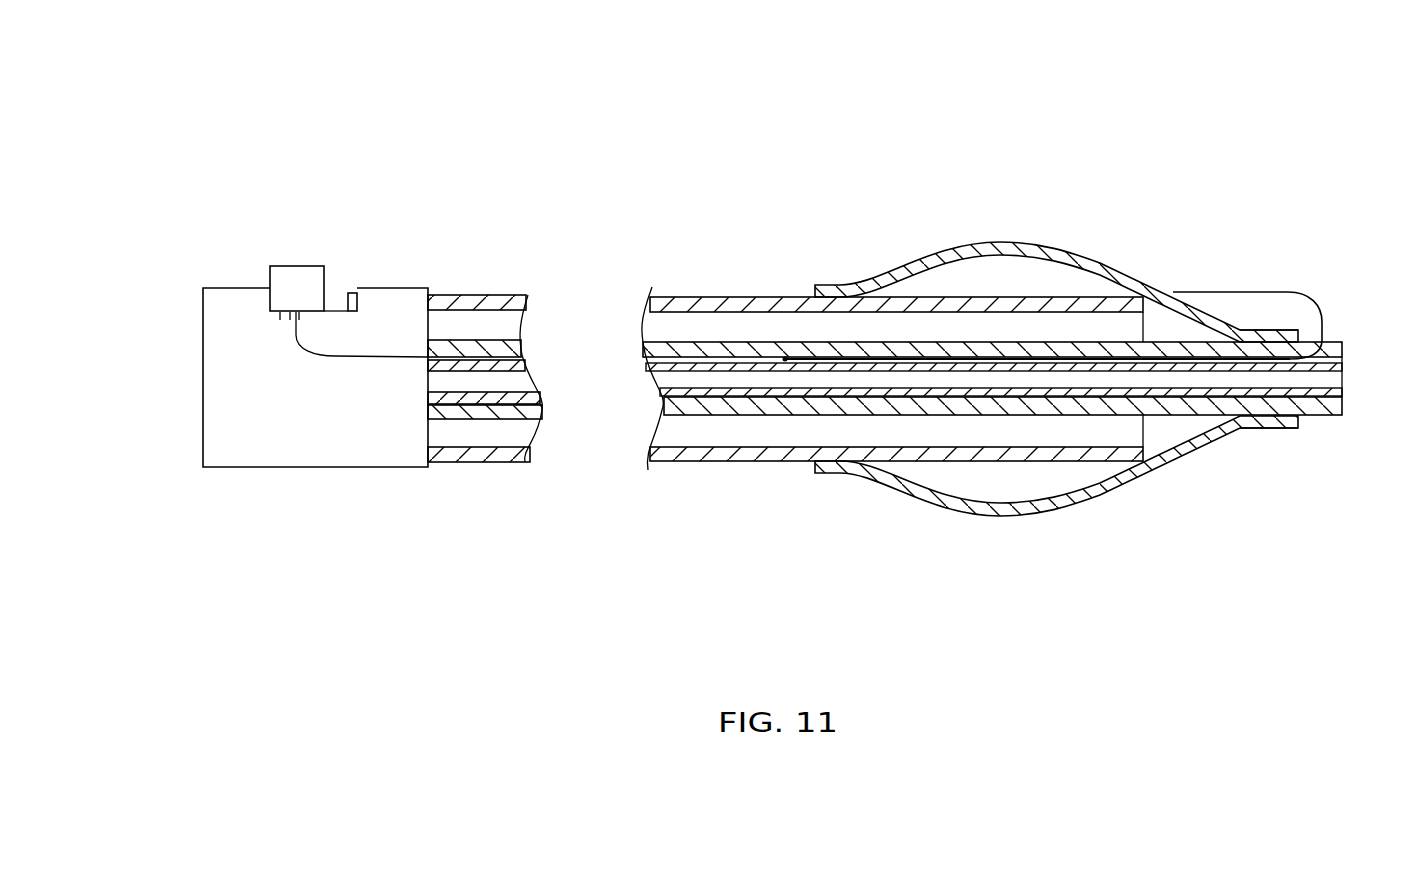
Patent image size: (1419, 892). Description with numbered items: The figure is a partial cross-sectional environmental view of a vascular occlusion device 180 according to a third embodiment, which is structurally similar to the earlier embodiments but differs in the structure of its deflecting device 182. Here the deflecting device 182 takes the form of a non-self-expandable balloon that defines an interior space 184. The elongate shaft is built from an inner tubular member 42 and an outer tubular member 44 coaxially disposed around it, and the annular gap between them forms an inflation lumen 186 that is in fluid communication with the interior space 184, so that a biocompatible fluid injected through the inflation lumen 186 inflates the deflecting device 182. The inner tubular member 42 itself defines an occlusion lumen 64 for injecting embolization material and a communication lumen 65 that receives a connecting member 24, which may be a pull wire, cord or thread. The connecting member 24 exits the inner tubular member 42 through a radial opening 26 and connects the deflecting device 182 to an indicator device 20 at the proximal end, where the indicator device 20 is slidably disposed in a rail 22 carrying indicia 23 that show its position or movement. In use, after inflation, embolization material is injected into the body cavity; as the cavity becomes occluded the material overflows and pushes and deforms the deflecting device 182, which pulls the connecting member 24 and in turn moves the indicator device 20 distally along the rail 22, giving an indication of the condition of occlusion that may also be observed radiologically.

The indicator device 20 is at (293, 265).
The rail 22 is at (349, 292).
The indicia 23 is at (270, 317).
The connecting member 24 is at (383, 357).
The radial opening 26 is at (1323, 350).
The inner tubular member 42 is at (930, 419).
The outer tubular member 44 is at (707, 465).
The occlusion lumen 64 is at (995, 377).
The communication lumen 65 is at (785, 357).
The vascular occlusion device 180 is at (853, 118).
The deflecting device 182 is at (1062, 241).
The interior space 184 is at (942, 277).
The inflation lumen 186 is at (736, 327).